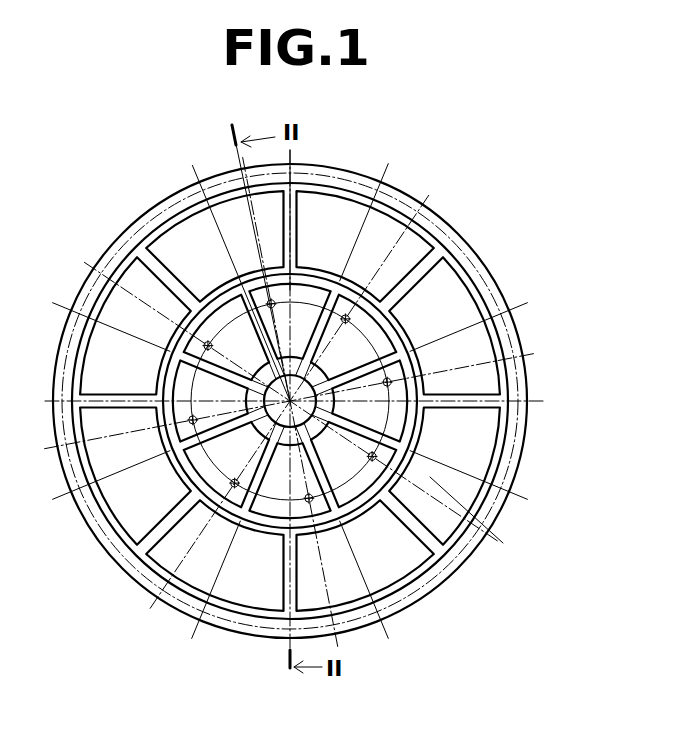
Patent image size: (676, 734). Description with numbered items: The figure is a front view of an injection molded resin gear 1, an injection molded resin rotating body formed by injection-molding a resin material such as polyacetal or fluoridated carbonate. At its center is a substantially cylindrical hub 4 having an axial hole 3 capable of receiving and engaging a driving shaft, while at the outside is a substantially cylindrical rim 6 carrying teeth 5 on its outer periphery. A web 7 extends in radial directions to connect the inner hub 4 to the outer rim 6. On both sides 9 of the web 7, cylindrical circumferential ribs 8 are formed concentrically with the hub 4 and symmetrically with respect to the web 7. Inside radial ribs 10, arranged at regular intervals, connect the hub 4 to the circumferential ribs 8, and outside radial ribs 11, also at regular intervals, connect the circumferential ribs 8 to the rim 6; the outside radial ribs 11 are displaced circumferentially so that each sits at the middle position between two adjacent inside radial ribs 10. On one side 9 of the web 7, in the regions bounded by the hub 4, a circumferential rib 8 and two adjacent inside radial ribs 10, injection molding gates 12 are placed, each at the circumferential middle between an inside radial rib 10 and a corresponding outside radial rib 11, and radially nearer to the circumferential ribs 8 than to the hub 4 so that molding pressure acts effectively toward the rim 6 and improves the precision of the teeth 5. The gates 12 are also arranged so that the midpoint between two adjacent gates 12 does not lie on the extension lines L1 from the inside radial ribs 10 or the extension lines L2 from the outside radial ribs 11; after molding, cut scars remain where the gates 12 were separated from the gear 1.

The injection molded resin gear 1 is at (489, 203).
The axial hole 3 is at (208, 470).
The hub 4 is at (277, 497).
The teeth 5 is at (488, 260).
The rim 6 is at (518, 398).
The web 7 is at (486, 345).
The circumferential ribs 8 is at (420, 430).
The sides of the web 9 is at (370, 506).
The inside radial ribs 10 is at (427, 458).
The outside radial ribs 11 is at (433, 532).
The injection molding gates 12 is at (267, 302).
The extension lines from inside radial ribs L1 is at (192, 170).
The extension lines from outside radial ribs L2 is at (292, 158).